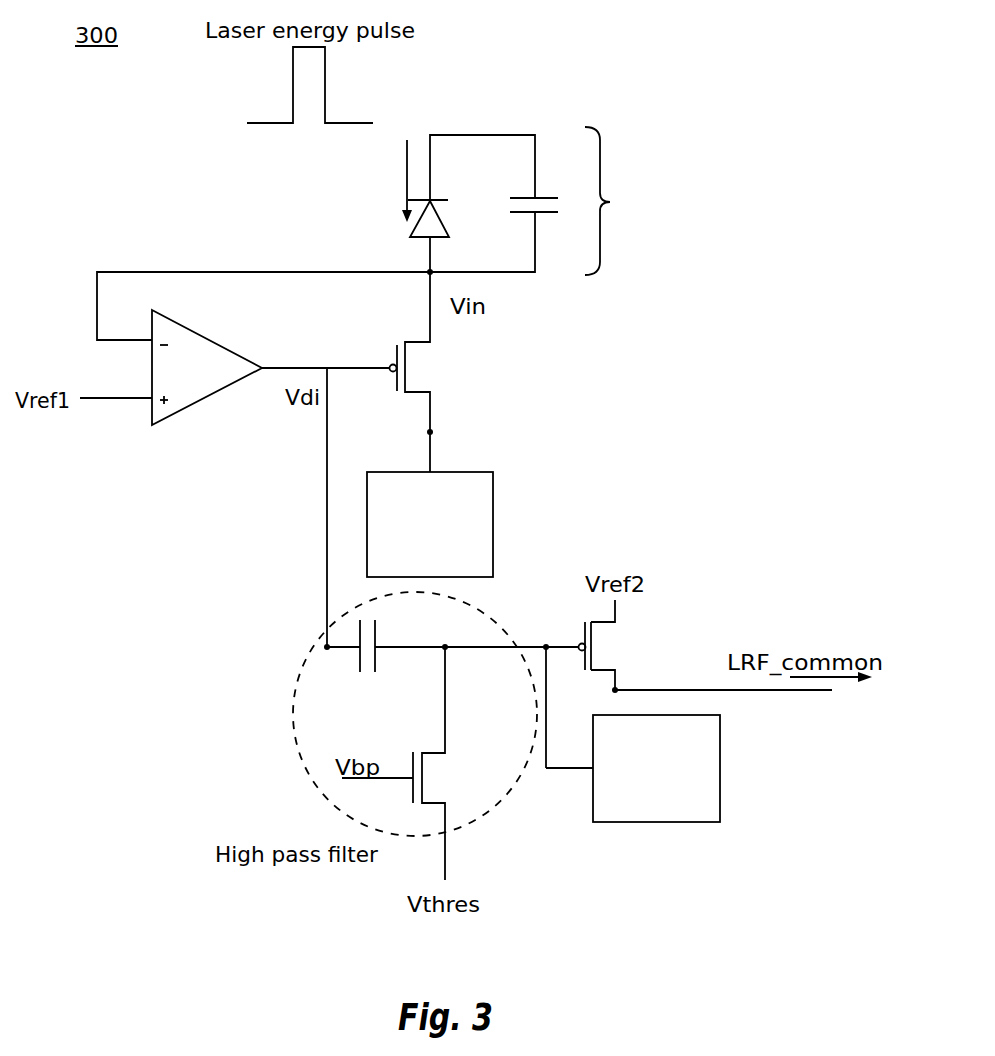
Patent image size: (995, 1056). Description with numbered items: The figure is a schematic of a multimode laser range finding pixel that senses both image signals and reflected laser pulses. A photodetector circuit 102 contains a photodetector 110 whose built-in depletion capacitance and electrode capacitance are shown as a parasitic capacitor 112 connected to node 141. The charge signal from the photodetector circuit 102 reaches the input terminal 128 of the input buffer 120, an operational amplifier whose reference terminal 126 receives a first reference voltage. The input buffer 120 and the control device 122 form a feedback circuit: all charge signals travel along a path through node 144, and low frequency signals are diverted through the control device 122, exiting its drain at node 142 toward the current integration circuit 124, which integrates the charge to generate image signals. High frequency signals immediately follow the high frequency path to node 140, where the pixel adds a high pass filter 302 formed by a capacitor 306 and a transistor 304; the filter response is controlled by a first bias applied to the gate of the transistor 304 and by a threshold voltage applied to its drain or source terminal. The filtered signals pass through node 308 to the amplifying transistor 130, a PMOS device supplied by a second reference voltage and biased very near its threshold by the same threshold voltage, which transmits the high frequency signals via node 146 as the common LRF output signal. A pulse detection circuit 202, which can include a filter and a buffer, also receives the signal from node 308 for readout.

The photodetector circuit 102 is at (604, 150).
The photodetector 110 is at (440, 216).
The parasitic capacitor 112 is at (543, 197).
The node 141 is at (428, 276).
The node 144 is at (262, 274).
The input buffer 120 is at (200, 402).
The input terminal 128 is at (151, 343).
The reference terminal 126 is at (151, 406).
The control device 122 is at (465, 356).
The node 142 is at (429, 431).
The current integration circuit 124 is at (493, 501).
The high pass filter 302 is at (300, 797).
The node 140 is at (326, 645).
The capacitor 306 is at (376, 660).
The transistor 304 is at (480, 769).
The node 308 is at (546, 645).
The amplifying transistor 130 is at (615, 647).
The node 146 is at (616, 689).
The pulse detection circuit 202 is at (720, 736).